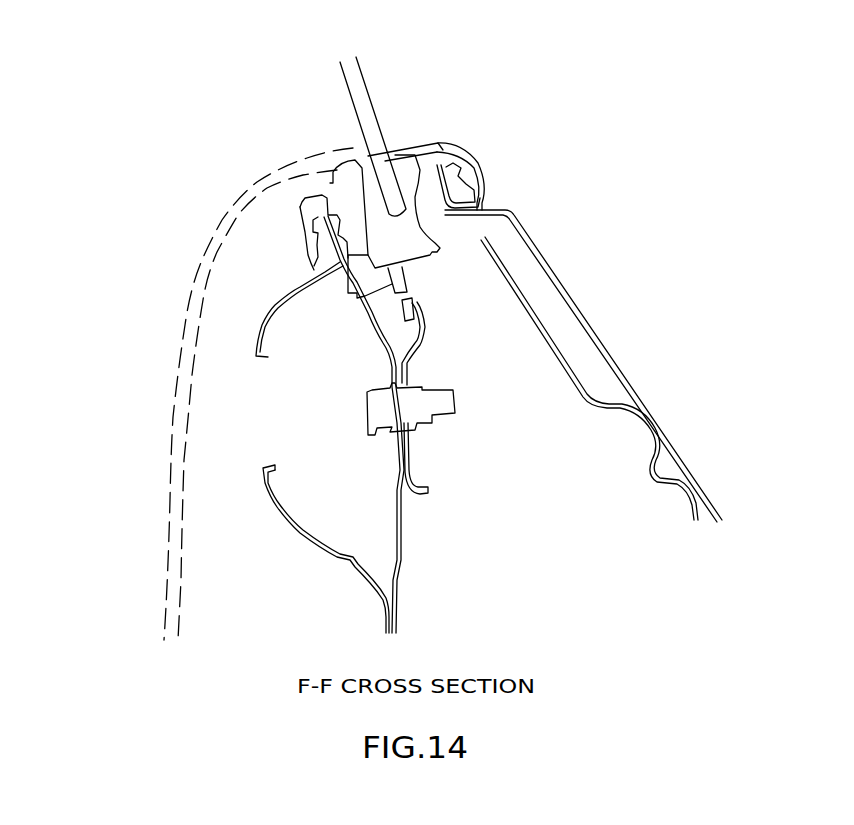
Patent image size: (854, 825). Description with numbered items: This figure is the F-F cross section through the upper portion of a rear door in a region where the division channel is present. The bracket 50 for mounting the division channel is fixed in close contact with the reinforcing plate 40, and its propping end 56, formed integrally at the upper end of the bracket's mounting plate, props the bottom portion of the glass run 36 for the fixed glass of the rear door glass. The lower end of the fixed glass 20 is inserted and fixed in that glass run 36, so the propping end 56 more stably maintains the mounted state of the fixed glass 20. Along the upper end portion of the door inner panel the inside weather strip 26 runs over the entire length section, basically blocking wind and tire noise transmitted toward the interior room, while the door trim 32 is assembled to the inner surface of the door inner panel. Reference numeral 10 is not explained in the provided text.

The wire harness 10 is at (280, 307).
The fixed glass 20 is at (363, 117).
The inside weather strip 26 is at (310, 208).
The door trim 32 is at (203, 275).
The glass run 36 is at (418, 243).
The reinforcing plate 40 is at (372, 340).
The bracket for mounting the division channel 50 is at (426, 342).
The propping end 56 is at (413, 273).